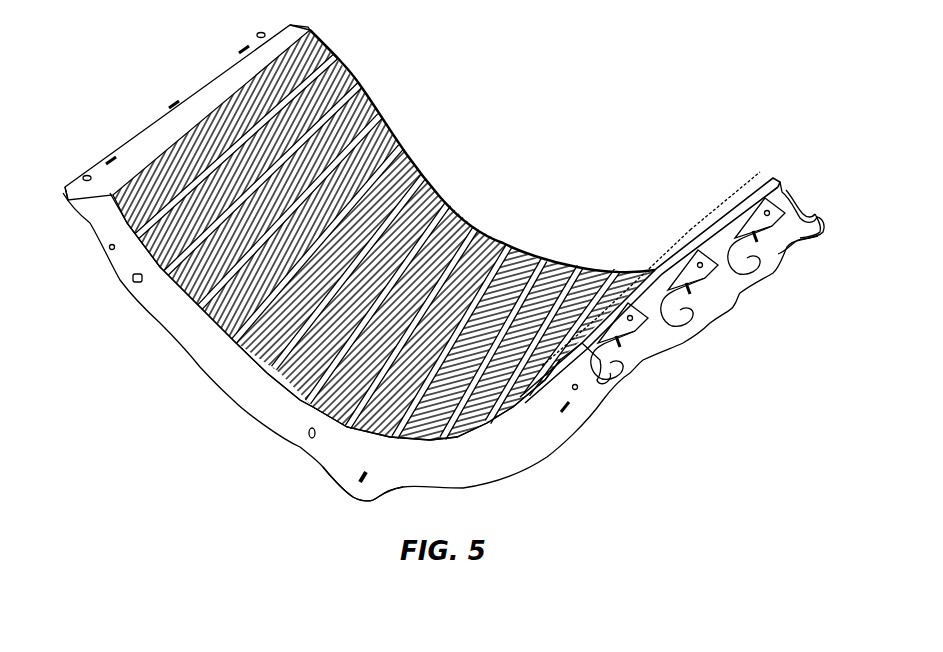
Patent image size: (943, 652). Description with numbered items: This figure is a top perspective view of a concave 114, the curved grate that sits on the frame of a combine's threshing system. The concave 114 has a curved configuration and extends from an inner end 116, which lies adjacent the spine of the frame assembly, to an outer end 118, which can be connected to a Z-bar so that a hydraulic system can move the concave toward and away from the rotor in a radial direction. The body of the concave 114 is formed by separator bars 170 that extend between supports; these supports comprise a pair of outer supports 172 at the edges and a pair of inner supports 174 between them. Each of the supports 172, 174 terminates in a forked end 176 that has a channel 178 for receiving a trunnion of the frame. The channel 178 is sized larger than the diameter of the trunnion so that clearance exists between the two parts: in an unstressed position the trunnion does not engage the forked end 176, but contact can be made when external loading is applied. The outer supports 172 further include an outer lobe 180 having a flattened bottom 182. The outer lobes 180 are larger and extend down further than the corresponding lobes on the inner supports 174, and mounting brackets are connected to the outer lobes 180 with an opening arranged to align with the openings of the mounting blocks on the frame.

The concave 114 is at (476, 100).
The inner end 116 is at (772, 176).
The outer end 118 is at (187, 107).
The separator bars 170 is at (465, 240).
The outer supports 172 is at (778, 250).
The inner supports 174 is at (698, 318).
The forked end 176 is at (820, 218).
The channel 178 is at (800, 210).
The outer lobe 180 is at (343, 475).
The flattened bottom 182 is at (338, 487).